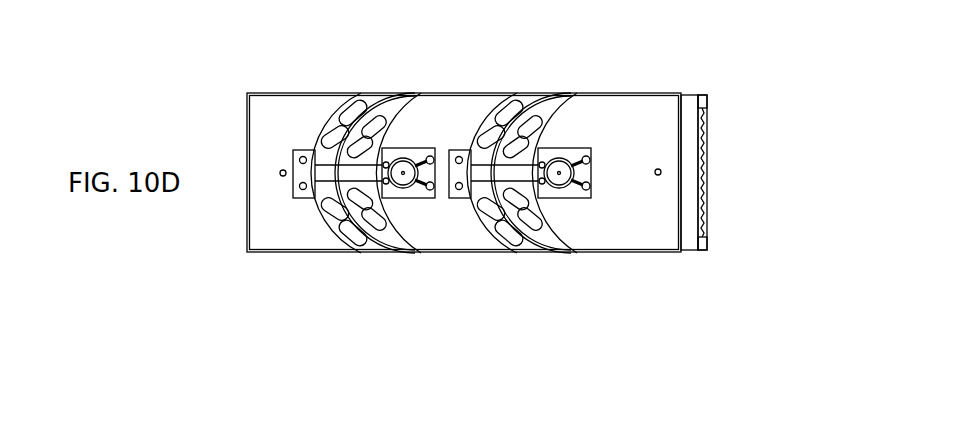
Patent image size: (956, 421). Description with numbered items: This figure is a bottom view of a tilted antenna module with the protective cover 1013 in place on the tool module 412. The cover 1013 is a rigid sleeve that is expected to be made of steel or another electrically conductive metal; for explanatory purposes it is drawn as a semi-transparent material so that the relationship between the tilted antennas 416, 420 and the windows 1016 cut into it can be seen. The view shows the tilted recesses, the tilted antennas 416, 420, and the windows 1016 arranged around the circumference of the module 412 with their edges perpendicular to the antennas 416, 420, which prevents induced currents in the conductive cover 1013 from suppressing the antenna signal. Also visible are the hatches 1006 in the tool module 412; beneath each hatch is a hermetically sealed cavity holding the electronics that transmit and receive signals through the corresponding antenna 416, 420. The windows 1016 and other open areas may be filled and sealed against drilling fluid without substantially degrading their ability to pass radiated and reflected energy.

The protective cover 1013 is at (302, 93).
The windows 1016 is at (520, 97).
The tool module 412 is at (688, 95).
The antenna 416 is at (370, 238).
The antenna 420 is at (527, 235).
The hatches 1006 is at (452, 200).